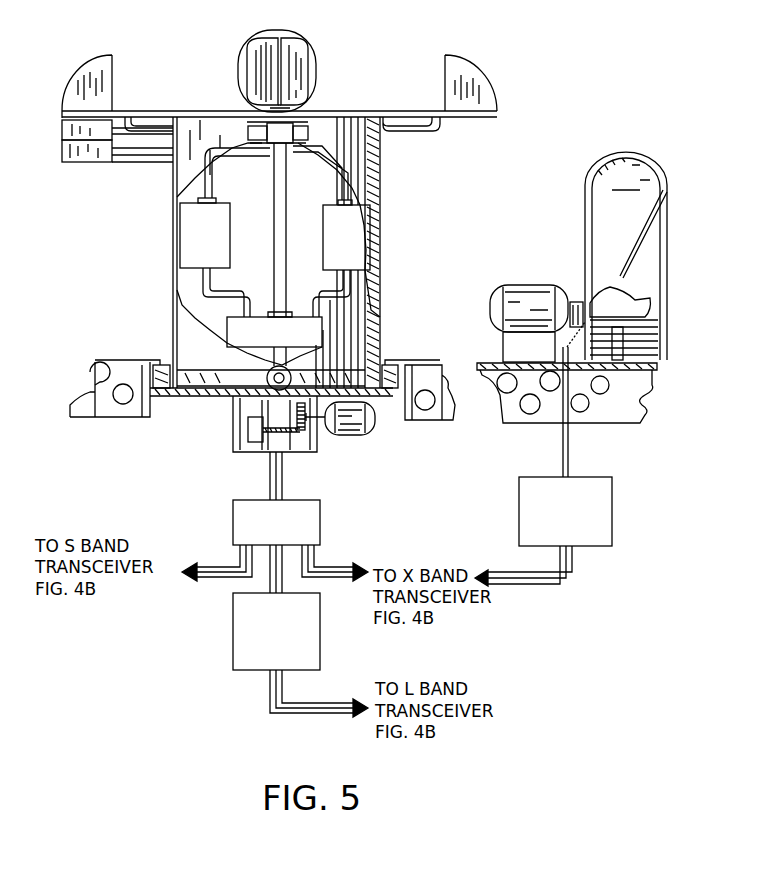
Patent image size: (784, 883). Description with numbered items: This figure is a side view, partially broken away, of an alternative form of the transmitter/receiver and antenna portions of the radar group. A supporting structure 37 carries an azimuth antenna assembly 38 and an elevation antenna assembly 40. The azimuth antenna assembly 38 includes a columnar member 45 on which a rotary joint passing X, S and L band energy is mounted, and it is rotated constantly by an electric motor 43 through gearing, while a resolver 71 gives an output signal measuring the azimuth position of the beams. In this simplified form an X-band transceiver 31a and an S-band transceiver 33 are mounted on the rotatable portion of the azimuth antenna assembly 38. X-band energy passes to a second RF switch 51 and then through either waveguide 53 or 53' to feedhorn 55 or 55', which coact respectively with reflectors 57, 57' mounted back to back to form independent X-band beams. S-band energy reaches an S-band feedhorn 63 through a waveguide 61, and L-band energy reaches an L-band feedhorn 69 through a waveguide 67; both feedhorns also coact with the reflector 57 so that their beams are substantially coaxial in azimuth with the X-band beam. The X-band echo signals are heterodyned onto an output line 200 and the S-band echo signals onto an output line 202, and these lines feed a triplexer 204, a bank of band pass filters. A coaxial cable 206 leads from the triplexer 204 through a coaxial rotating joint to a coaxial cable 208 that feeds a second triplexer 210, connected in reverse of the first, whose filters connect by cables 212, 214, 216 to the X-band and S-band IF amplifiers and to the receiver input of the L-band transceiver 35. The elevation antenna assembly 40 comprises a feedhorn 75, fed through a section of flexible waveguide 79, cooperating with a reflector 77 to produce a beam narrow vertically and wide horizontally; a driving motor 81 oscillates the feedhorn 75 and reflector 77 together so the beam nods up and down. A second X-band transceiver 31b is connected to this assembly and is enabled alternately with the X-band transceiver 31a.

The azimuth antenna assembly 38 is at (216, 57).
The waveguide 53 is at (279, 104).
The waveguide 53' is at (417, 135).
The feedhorn 55 is at (84, 78).
The feedhorn 55' is at (477, 76).
The reflector 57 is at (269, 60).
The reflector 57' is at (308, 57).
The waveguide 61 is at (150, 133).
The S-band feedhorn 63 is at (62, 130).
The L-band feedhorn 69 is at (62, 152).
The waveguide 67 is at (162, 160).
The second RF switch 51 is at (296, 128).
The columnar member 45 is at (384, 258).
The X-band transceiver 31a is at (227, 234).
The S-band transceiver 33 is at (328, 241).
The output line 200 is at (227, 293).
The output line 202 is at (332, 289).
The triplexer 204 is at (318, 330).
The coaxial cable 206 is at (270, 360).
The supporting structure 37 is at (132, 360).
The resolver 71 is at (248, 437).
The electric motor 43 is at (374, 425).
The coaxial cable 208 is at (284, 481).
The triplexer 210 is at (317, 512).
The cable 214 is at (220, 563).
The cable 212 is at (330, 568).
The cable 216 is at (267, 578).
The L-band transceiver 35 is at (238, 649).
The elevation antenna assembly 40 is at (683, 288).
The reflector 77 is at (605, 192).
The driving motor 81 is at (512, 288).
The flexible waveguide 79 is at (578, 301).
The feedhorn 75 is at (622, 303).
The X-band transceiver 31b is at (608, 501).